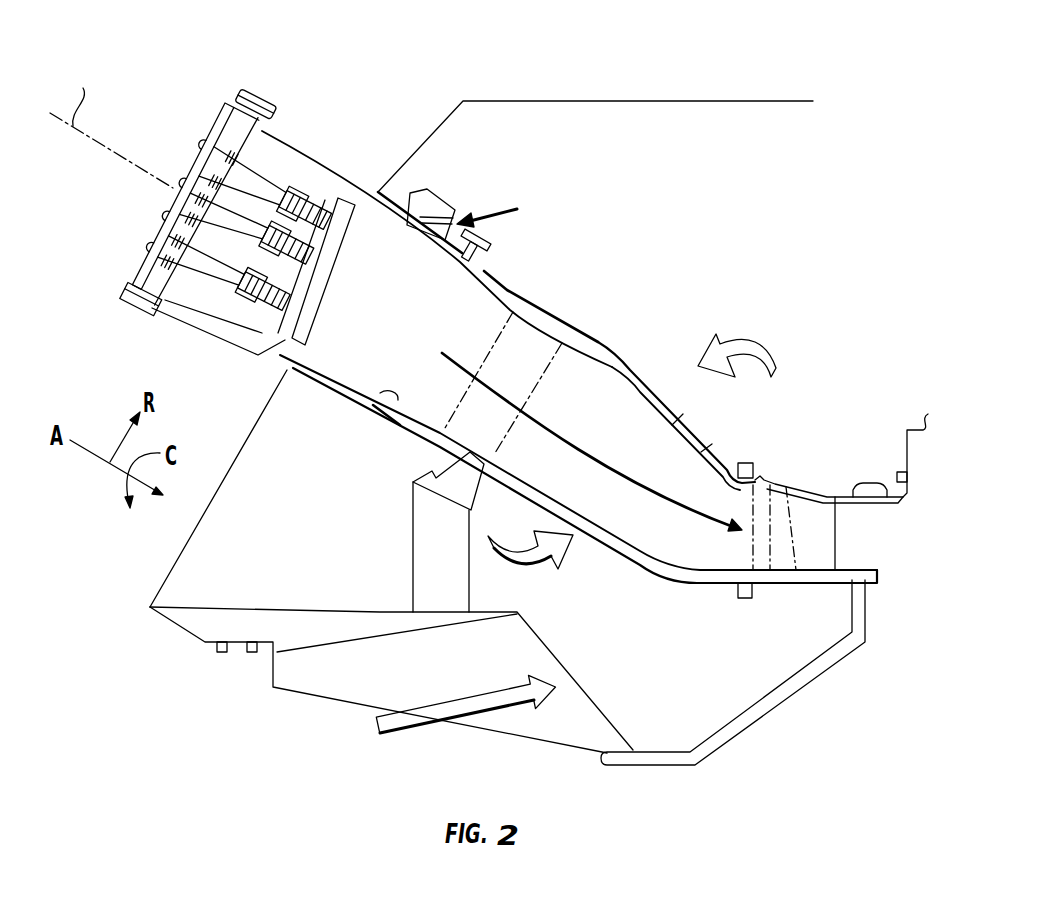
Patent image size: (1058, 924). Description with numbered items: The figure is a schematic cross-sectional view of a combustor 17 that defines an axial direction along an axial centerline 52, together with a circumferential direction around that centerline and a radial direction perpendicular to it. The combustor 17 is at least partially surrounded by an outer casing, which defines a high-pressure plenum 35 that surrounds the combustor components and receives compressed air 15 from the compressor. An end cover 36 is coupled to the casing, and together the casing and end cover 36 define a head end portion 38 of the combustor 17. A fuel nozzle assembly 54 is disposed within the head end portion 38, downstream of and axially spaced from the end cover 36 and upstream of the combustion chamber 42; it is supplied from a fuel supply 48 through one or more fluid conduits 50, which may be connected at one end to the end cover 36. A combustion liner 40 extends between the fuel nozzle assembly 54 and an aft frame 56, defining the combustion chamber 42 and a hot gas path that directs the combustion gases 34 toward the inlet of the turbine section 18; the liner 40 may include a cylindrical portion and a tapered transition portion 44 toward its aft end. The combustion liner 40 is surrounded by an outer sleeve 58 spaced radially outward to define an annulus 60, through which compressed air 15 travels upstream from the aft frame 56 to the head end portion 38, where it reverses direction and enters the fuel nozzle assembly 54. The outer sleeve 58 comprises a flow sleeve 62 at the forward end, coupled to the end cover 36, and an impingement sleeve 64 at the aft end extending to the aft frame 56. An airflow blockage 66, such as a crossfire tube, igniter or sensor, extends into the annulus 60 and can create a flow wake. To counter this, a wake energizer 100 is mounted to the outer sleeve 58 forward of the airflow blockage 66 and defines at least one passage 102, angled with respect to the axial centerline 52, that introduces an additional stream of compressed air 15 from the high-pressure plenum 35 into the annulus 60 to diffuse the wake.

The compressed air 15 is at (508, 208).
The combustor 17 is at (597, 70).
The turbine section 18 is at (873, 550).
The combustion gases 34 is at (572, 437).
The high-pressure plenum 35 is at (740, 210).
The end cover 36 is at (147, 257).
The head end portion 38 is at (225, 318).
The combustion liner 40 is at (677, 420).
The combustion chamber 42 is at (385, 327).
The aft chamber portion 44 is at (587, 387).
The fuel supply 48 is at (187, 162).
The fluid conduits 50 is at (238, 292).
The axial centerline 52 is at (95, 142).
The fuel nozzle assembly 54 is at (245, 272).
The aft frame 56 is at (745, 462).
The outer sleeve 58 is at (569, 336).
The annulus 60 is at (508, 293).
The flow sleeve 62 is at (368, 180).
The impingement sleeve 64 is at (562, 325).
The airflow blockage 66 is at (488, 243).
The wake energizer 100 is at (430, 202).
The passage 102 is at (435, 212).